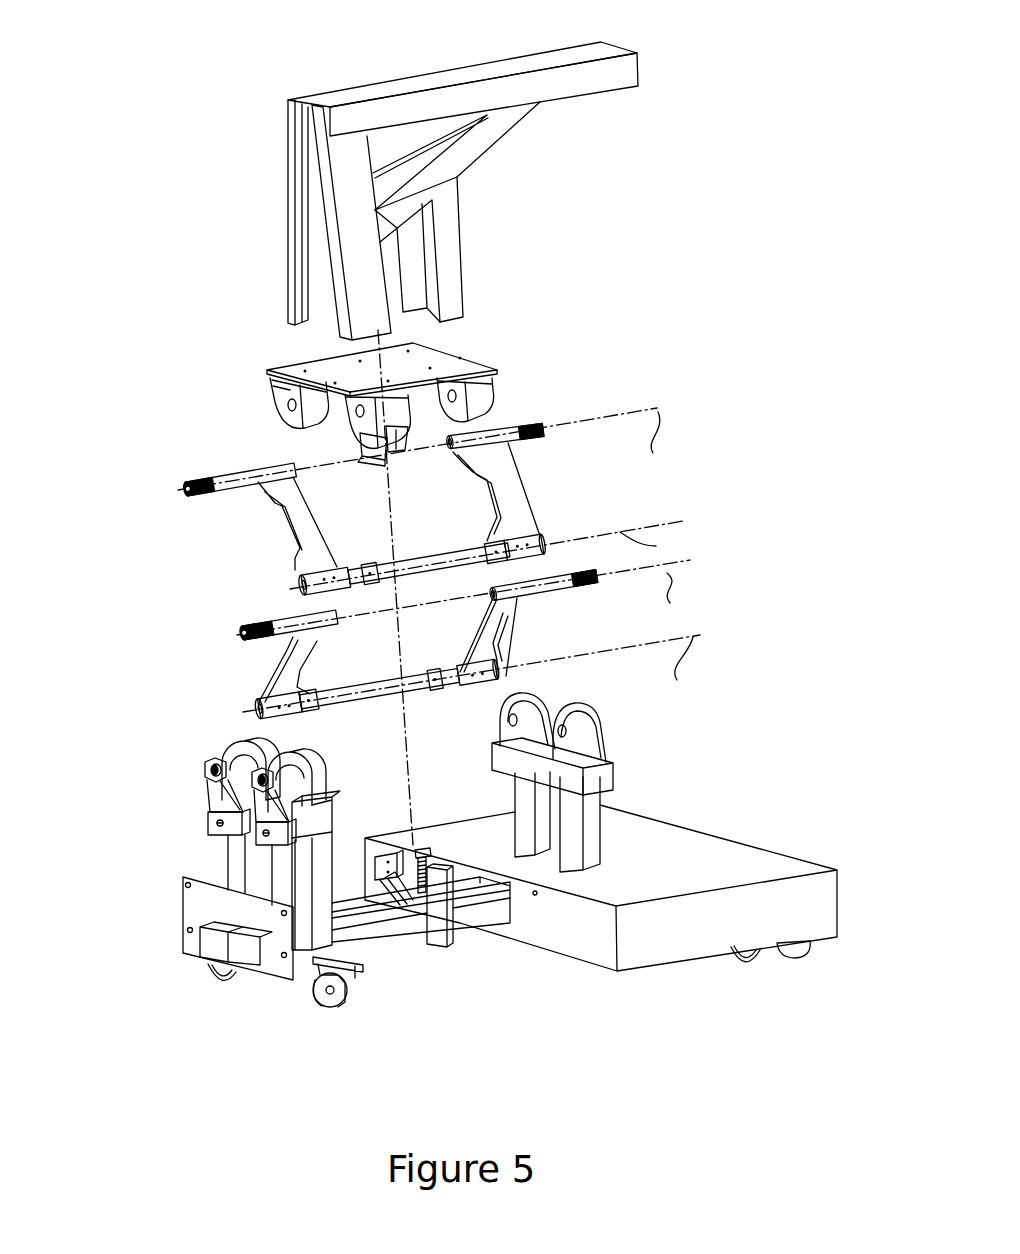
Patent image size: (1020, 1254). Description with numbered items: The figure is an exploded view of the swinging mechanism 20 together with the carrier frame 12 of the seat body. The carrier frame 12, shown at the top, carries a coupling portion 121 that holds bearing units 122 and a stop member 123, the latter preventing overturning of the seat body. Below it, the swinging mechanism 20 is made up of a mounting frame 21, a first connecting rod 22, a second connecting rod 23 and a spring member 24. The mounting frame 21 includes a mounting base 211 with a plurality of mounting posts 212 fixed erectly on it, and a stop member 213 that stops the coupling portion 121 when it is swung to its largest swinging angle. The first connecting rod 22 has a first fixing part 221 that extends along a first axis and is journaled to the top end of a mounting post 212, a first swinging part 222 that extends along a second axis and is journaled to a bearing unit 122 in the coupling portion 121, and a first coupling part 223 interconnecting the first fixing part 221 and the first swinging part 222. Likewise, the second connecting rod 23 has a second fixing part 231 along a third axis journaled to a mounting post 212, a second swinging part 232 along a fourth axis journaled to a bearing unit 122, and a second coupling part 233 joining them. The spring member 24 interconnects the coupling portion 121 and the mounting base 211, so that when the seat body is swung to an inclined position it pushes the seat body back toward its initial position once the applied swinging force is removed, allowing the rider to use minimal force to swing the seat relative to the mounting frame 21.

The carrier frame 12 is at (557, 220).
The coupling portion 121 is at (497, 367).
The bearing unit 122 is at (365, 438).
The stop member 123 is at (393, 440).
The swinging mechanism 20 is at (716, 535).
The mounting frame 21 is at (168, 793).
The mounting base 211 is at (387, 937).
The mounting posts 212 is at (593, 847).
The stop member 213 is at (447, 937).
The first connecting rod 22 is at (168, 490).
The first fixing part 221 is at (510, 440).
The first swinging part 222 is at (437, 570).
The first coupling part 223 is at (512, 493).
The second connecting rod 23 is at (222, 638).
The second fixing part 231 is at (547, 590).
The second swinging part 232 is at (363, 700).
The second coupling part 233 is at (493, 632).
The spring member 24 is at (423, 853).